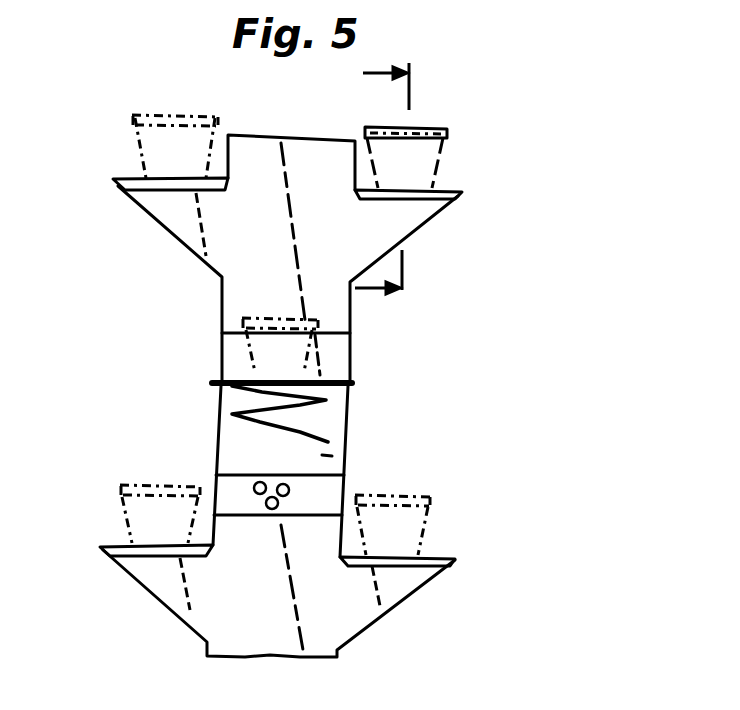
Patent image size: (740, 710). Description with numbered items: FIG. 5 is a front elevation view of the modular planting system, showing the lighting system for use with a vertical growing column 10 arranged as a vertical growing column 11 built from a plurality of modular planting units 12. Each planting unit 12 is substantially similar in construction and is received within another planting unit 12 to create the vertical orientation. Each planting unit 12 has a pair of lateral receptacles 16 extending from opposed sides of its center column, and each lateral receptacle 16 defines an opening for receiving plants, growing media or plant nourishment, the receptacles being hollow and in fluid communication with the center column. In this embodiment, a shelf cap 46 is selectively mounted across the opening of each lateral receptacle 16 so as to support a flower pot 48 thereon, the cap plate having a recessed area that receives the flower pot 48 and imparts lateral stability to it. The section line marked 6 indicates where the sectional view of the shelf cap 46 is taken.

The lighting system for use with a vertical growing column 10 is at (538, 212).
The vertical growing column 11 is at (172, 410).
The modular planting unit 12 is at (352, 320).
The lateral receptacle 16 is at (120, 186).
The shelf cap 46 is at (173, 186).
The flower pot 48 is at (436, 161).
The section line 6- 6 is at (396, 184).